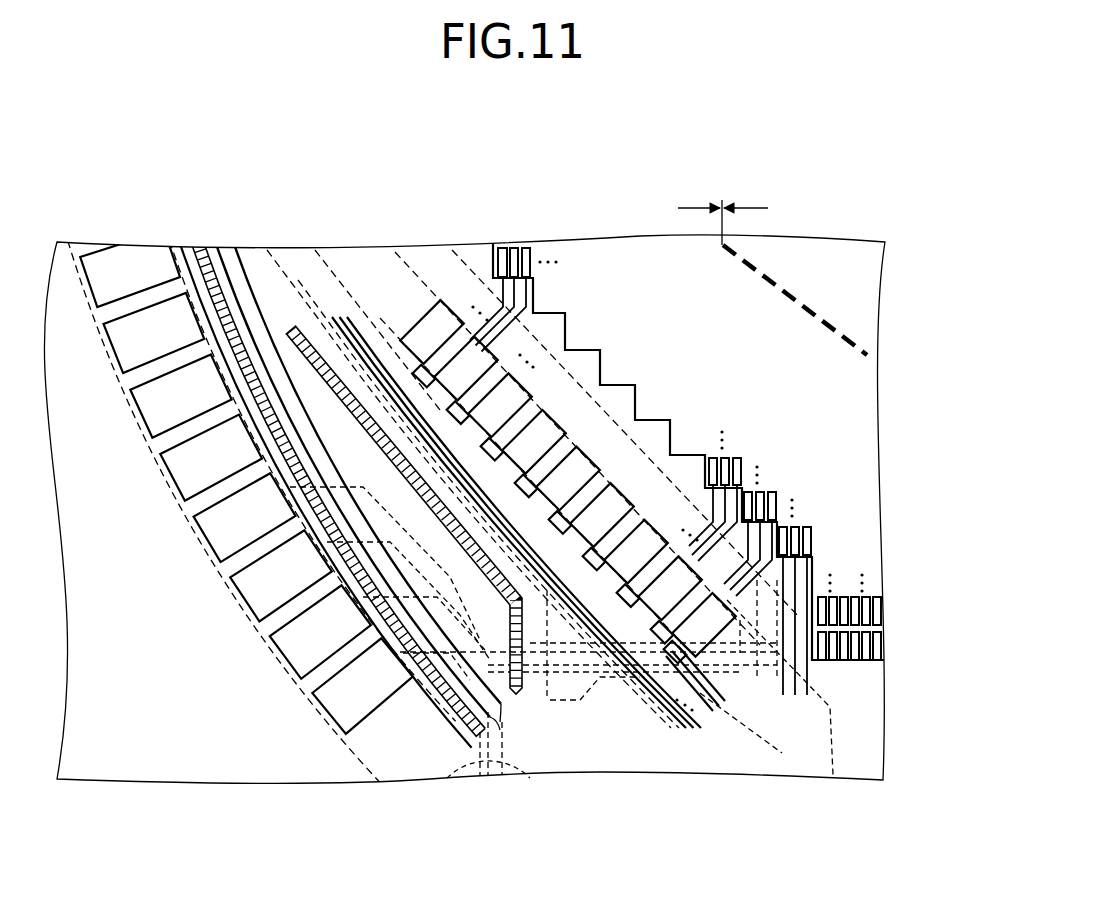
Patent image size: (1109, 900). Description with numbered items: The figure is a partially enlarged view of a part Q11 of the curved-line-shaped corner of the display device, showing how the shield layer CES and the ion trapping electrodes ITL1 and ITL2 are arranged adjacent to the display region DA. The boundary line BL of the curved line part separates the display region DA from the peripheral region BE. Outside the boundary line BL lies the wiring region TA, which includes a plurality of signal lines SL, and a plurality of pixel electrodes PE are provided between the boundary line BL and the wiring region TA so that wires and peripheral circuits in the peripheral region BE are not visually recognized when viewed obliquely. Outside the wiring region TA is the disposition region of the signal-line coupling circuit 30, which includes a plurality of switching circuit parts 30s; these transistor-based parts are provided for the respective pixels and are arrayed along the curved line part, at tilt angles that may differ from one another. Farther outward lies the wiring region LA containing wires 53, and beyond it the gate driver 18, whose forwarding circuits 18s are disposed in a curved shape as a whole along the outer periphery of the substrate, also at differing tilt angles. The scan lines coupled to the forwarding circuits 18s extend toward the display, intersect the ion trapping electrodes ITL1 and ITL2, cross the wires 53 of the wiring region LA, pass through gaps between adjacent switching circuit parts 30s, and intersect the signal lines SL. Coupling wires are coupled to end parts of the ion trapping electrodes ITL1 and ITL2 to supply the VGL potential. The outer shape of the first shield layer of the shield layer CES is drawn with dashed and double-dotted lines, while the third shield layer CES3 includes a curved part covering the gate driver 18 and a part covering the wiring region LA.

The gate driver 18 is at (91, 248).
The forwarding circuits 18s is at (246, 482).
The ion trapping electrode ITL1 is at (330, 488).
The ion trapping electrode ITL2 is at (404, 510).
The wiring region LA is at (445, 479).
The signal-line coupling circuit 30 is at (377, 330).
The switching circuit parts 30s is at (550, 514).
The wiring region TA is at (568, 478).
The signal lines SL is at (638, 486).
The pixel electrodes PE is at (689, 454).
The peripheral region BE is at (690, 207).
The display region DA is at (750, 207).
The part Q11 is at (886, 186).
The boundary line BL is at (795, 300).
The third shield layer CES3 is at (390, 583).
The shield layer CES is at (516, 522).
The wires 53 is at (695, 678).